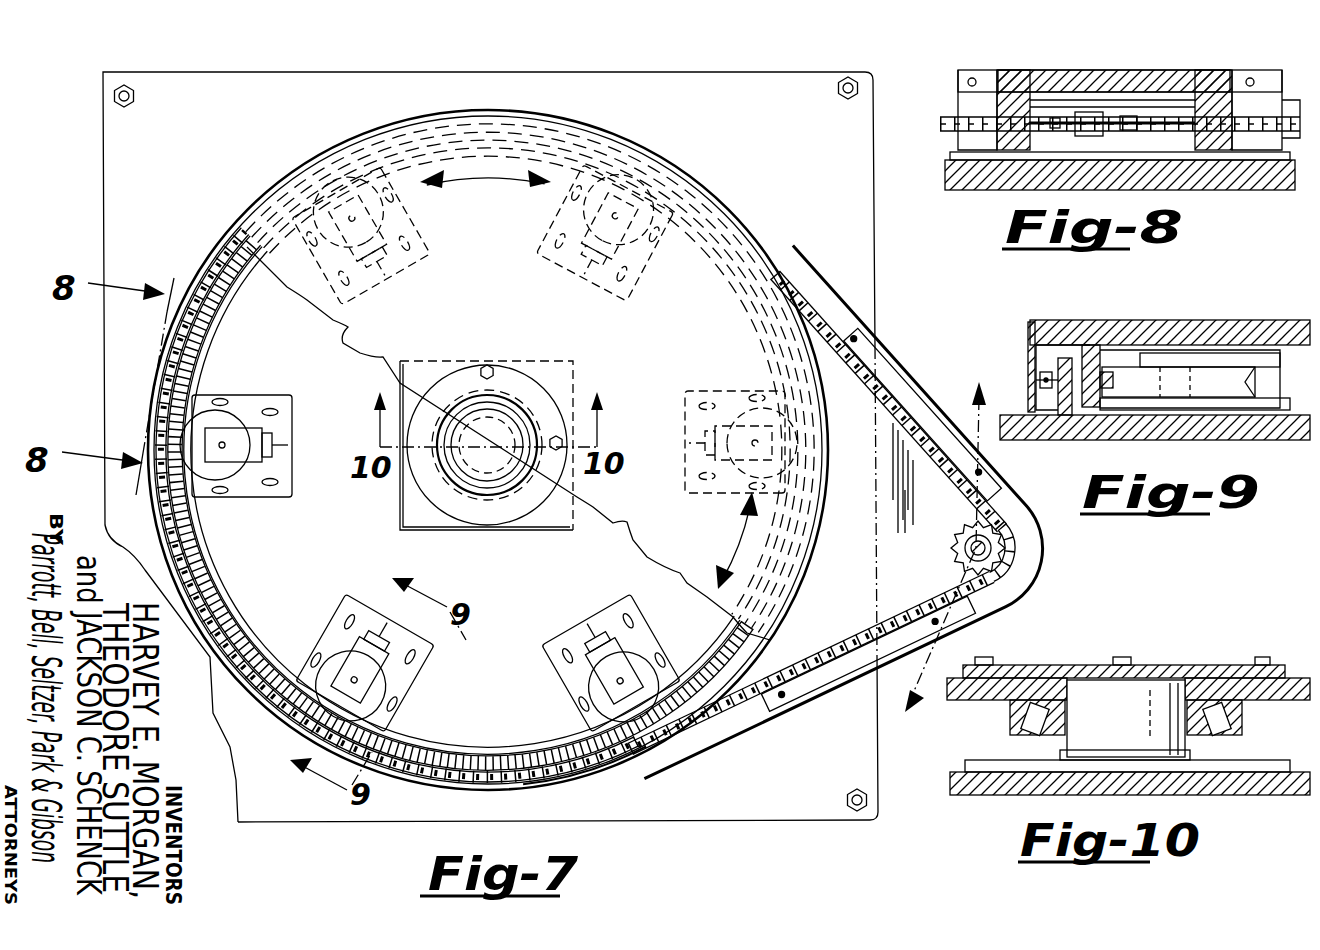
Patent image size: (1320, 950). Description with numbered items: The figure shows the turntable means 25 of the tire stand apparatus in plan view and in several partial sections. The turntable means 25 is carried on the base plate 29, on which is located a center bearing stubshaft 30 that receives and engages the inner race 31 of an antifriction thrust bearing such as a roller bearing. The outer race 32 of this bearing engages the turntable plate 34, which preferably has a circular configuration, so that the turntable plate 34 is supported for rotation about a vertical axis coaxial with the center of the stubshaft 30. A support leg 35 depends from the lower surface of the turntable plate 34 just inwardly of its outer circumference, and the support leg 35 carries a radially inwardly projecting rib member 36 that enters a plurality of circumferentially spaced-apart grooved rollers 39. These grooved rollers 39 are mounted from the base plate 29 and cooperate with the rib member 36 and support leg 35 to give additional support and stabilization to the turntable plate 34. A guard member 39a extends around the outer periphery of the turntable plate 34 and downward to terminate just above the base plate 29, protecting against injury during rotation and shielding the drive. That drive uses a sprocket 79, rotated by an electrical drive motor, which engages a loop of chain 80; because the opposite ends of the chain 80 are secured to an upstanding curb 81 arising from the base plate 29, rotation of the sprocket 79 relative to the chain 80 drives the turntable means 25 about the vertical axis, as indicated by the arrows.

In FIG. 7, the turntable means 25 is at (712, 160).
In FIG. 8, the turntable means 25 is at (1200, 65).
In FIG. 9, the turntable means 25 is at (1214, 318).
In FIG. 10, the turntable means 25 is at (1210, 645).
In FIG. 7, the base plate 29 is at (830, 178).
In FIG. 8, the base plate 29 is at (990, 180).
In FIG. 9, the base plate 29 is at (1296, 440).
In FIG. 10, the base plate 29 is at (1252, 790).
In FIG. 7, the center bearing stubshaft 30 is at (547, 383).
In FIG. 10, the center bearing stubshaft 30 is at (1130, 728).
In FIG. 7, the inner race 31 is at (470, 470).
In FIG. 10, the inner race 31 is at (1055, 738).
In FIG. 7, the outer race 32 is at (501, 493).
In FIG. 10, the outer race 32 is at (1013, 716).
In FIG. 7, the turntable plate 34 is at (504, 300).
In FIG. 8, the turntable plate 34 is at (1127, 78).
In FIG. 9, the turntable plate 34 is at (1203, 325).
In FIG. 10, the turntable plate 34 is at (1292, 680).
In FIG. 7, the support leg 35 is at (215, 318).
In FIG. 9, the support leg 35 is at (1095, 410).
In FIG. 7, the rib member 36 is at (210, 346).
In FIG. 9, the rib member 36 is at (1098, 372).
In FIG. 7, the grooved rollers 39 is at (392, 222).
In FIG. 9, the grooved rollers 39 is at (1218, 380).
In FIG. 7, the guard member 39a is at (588, 766).
In FIG. 8, the guard member 39a is at (985, 80).
In FIG. 9, the guard member 39a is at (1030, 345).
In FIG. 7, the sprocket 79 is at (946, 545).
In FIG. 7, the chain 80 is at (664, 738).
In FIG. 8, the chain 80 is at (945, 122).
In FIG. 9, the chain 80 is at (1040, 382).
In FIG. 7, the upstanding curb 81 is at (641, 760).
In FIG. 8, the upstanding curb 81 is at (1170, 156).
In FIG. 9, the upstanding curb 81 is at (1065, 360).